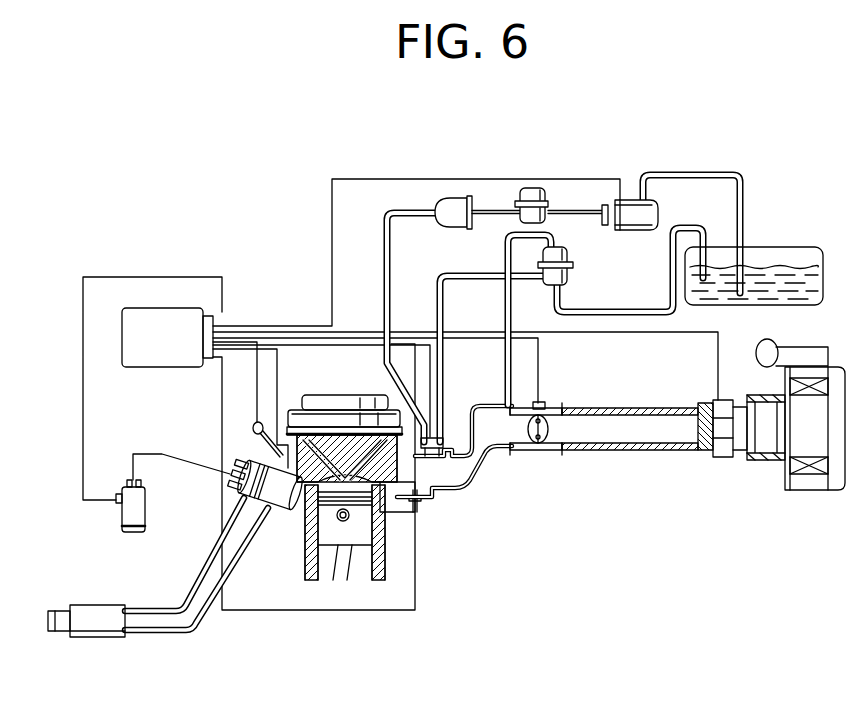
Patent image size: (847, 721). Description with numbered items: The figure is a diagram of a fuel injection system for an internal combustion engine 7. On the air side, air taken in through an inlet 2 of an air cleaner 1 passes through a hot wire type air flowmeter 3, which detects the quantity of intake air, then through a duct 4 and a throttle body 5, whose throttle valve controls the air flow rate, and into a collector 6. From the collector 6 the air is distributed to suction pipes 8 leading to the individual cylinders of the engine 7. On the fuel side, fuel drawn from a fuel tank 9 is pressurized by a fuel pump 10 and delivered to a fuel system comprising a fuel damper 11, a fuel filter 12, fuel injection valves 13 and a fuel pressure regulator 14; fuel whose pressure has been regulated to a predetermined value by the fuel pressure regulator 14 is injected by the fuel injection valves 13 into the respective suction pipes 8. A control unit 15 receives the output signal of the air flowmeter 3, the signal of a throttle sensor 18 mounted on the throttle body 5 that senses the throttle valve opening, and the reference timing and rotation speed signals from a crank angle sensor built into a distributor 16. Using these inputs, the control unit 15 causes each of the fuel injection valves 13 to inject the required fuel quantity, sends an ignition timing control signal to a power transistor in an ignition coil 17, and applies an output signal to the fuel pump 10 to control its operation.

The air cleaner 1 is at (808, 490).
The inlet 2 is at (772, 347).
The hot wire type air flowmeter 3 is at (718, 457).
The duct 4 is at (625, 450).
The throttle body 5 is at (540, 447).
The collector 6 is at (500, 447).
The internal combustion engine 7 is at (343, 395).
The suction pipes 8 is at (432, 476).
The fuel tank 9 is at (797, 247).
The fuel pump 10 is at (632, 200).
The fuel damper 11 is at (531, 188).
The fuel filter 12 is at (447, 197).
The fuel injection valves 13 is at (440, 438).
The fuel pressure regulator 14 is at (573, 278).
The control unit 15 is at (148, 308).
The distributor 16 is at (222, 498).
The ignition coil 17 is at (118, 526).
The throttle sensor 18 is at (545, 406).